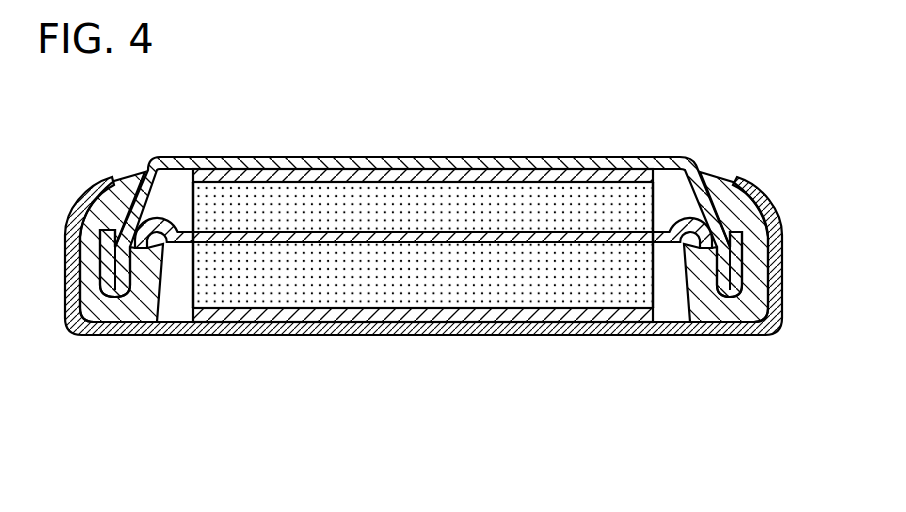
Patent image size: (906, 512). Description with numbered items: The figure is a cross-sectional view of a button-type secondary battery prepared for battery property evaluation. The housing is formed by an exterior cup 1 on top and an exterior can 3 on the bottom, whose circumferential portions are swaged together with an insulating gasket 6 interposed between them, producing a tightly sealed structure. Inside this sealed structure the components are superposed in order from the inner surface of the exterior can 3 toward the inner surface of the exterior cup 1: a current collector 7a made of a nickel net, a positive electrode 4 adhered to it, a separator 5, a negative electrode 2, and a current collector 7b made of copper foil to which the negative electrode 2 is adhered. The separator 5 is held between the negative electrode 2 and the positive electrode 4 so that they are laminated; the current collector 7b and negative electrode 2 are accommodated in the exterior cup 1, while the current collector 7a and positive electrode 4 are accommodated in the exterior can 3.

The exterior cup 1 is at (325, 157).
The negative electrode 2 is at (440, 196).
The exterior can 3 is at (528, 327).
The positive electrode 4 is at (588, 287).
The separator 5 is at (258, 245).
The insulating gasket 6 is at (718, 192).
The current collector 7a is at (381, 314).
The current collector 7b is at (563, 160).